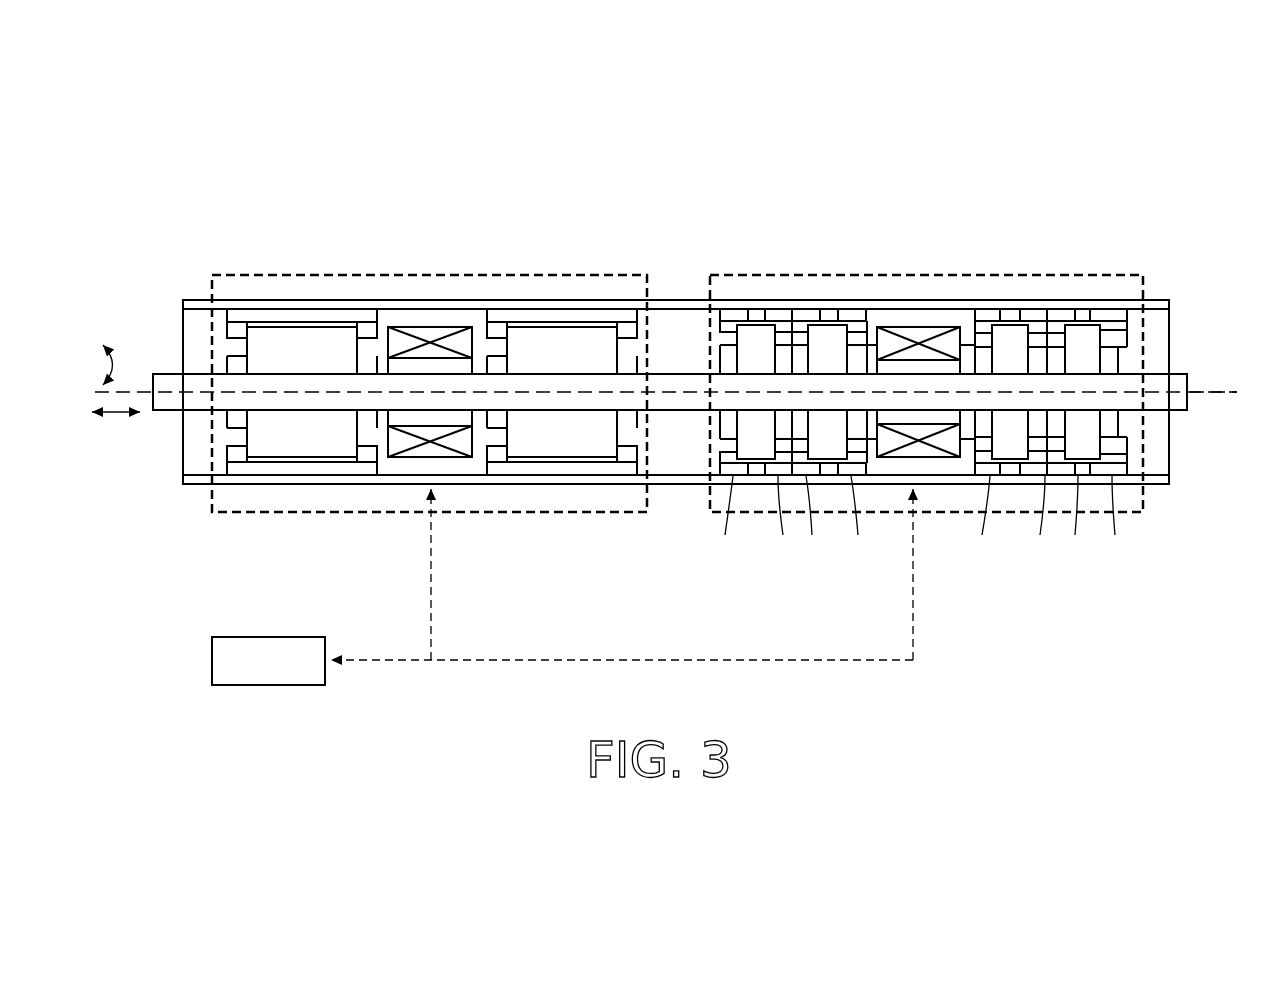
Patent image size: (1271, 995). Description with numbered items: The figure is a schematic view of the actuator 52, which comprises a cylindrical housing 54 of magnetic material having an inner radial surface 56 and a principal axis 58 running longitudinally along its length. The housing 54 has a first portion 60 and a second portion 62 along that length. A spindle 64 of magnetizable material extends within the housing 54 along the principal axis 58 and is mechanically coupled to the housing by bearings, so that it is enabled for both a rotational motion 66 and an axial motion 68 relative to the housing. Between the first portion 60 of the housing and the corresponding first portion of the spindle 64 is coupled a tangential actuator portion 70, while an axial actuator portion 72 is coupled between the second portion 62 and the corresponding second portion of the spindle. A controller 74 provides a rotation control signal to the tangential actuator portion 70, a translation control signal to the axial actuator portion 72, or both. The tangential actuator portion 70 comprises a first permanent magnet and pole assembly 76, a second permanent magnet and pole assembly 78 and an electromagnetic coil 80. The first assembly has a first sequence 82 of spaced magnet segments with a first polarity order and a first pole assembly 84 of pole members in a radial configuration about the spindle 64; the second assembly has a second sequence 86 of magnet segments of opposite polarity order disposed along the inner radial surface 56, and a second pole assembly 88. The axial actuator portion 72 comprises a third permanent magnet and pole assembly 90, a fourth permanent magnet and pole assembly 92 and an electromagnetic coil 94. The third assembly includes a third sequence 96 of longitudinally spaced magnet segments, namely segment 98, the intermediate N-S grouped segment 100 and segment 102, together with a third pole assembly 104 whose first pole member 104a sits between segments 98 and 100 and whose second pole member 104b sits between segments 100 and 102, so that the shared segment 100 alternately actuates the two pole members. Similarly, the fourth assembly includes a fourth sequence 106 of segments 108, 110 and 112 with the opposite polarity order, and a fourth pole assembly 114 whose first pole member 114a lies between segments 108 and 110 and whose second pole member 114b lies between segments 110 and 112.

The actuator 52 is at (1055, 132).
The housing 54 is at (205, 300).
The inner radial surface 56 is at (688, 472).
The principal axis 58 is at (1220, 392).
The first portion 60 is at (371, 375).
The second portion 62 is at (1051, 374).
The spindle 64 is at (168, 405).
The rotational motion 66 is at (108, 342).
The axial motion 68 is at (110, 418).
The tangential actuator portion 70 is at (429, 369).
The axial actuator portion 72 is at (938, 349).
The controller 74 is at (263, 688).
The first permanent magnet and pole assembly 76 is at (308, 516).
The second permanent magnet and pole assembly 78 is at (554, 404).
The electromagnetic coil 80 is at (400, 462).
The first sequence of magnet segments 82 is at (253, 470).
The first pole assembly 84 is at (330, 340).
The second sequence of magnet segments 86 is at (556, 470).
The second pole assembly 88 is at (575, 340).
The third permanent magnet and pole assembly 90 is at (801, 405).
The fourth permanent magnet and pole assembly 92 is at (1057, 405).
The electromagnetic coil 94 is at (907, 460).
The third sequence of magnet segments 96 is at (706, 318).
The magnet segment 98 is at (736, 309).
The second magnet segment 100 is at (765, 294).
The nth magnet segment 102 is at (858, 309).
The third pole assembly 104 is at (787, 318).
The first pole member 104a is at (745, 360).
The second pole member 104b is at (848, 345).
The fourth sequence of magnet segments 106 is at (1142, 318).
The magnet segment 108 is at (995, 309).
The second magnet segment 110 is at (1020, 294).
The nth magnet segment 112 is at (1108, 309).
The fourth pole assembly 114 is at (1056, 318).
The first pole member 114a is at (998, 338).
The second pole member 114b is at (1092, 340).